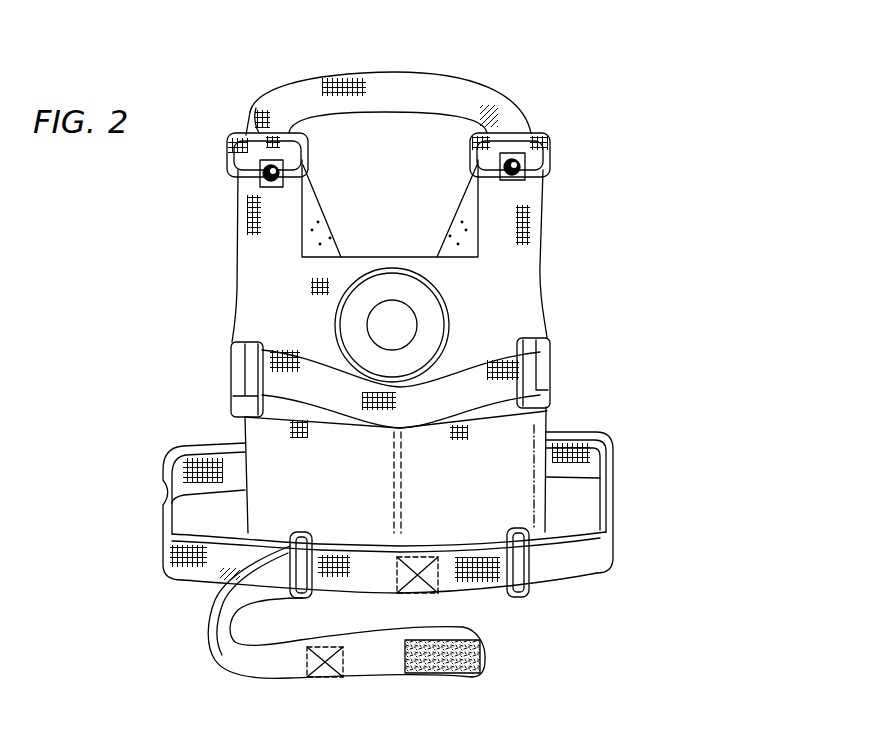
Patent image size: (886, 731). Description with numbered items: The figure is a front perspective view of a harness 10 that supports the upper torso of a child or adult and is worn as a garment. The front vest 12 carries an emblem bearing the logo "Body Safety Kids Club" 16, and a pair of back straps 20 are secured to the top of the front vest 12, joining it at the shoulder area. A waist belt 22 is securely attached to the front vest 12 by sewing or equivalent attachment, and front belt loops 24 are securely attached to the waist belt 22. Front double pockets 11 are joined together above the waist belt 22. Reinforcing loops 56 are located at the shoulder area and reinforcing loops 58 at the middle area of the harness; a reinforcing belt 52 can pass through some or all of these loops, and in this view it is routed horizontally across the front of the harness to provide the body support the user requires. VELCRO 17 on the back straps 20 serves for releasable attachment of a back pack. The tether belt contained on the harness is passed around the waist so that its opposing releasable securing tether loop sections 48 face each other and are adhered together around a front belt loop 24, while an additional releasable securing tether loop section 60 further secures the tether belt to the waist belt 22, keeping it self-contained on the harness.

The harness 10 is at (357, 60).
The front double pockets 11 is at (310, 467).
The front vest 12 is at (535, 297).
The logo "Body Safety Kids Club" 16 is at (438, 294).
The VELCRO 17 is at (440, 356).
The back straps 20 is at (457, 220).
The waist belt 22 is at (163, 490).
The front belt loops 24 is at (299, 533).
The releasable securing tether loop sections 48 is at (437, 577).
The reinforcing belt 52 is at (437, 76).
The reinforcing loops 56 is at (230, 152).
The reinforcing loops 58 is at (247, 372).
The additional releasable securing tether loop section 60 is at (473, 663).